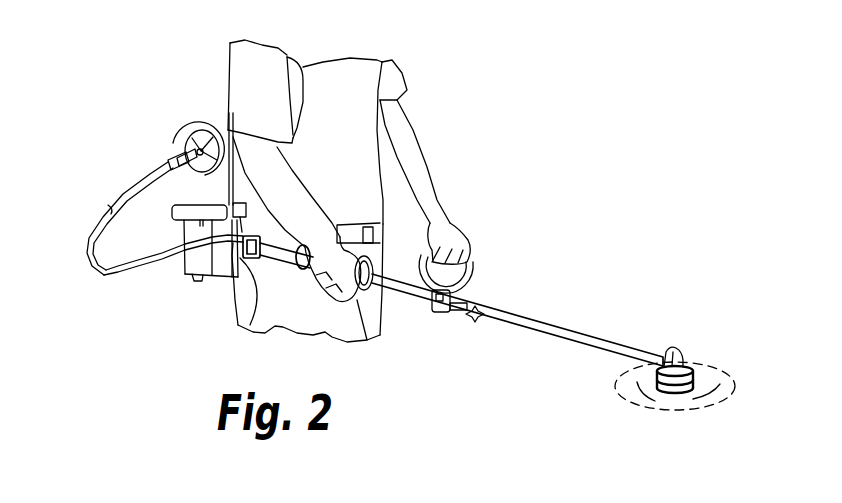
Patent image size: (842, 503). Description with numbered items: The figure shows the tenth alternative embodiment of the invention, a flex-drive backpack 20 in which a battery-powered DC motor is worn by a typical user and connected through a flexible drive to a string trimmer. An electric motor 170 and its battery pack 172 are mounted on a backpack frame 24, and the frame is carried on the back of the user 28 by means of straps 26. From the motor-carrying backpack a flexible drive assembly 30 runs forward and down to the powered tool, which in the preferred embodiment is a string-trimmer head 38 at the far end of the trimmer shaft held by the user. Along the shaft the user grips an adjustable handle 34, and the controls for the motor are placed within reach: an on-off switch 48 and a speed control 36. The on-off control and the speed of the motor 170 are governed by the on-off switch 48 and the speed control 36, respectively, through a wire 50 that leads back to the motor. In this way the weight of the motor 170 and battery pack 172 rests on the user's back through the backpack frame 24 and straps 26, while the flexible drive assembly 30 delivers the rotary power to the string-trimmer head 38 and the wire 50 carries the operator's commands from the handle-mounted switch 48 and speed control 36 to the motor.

The flex-drive backpack 20 is at (275, 258).
The backpack frame 24 is at (172, 207).
The straps 26 is at (307, 67).
The user 28 is at (350, 85).
The flexible drive assembly 30 is at (93, 236).
The adjustable handle 34 is at (442, 313).
The speed control 36 is at (330, 302).
The string-trimmer head 38 is at (688, 362).
The on-off switch 48 is at (380, 248).
The wire 50 is at (122, 273).
The electric motor 170 is at (222, 118).
The battery pack 172 is at (197, 278).